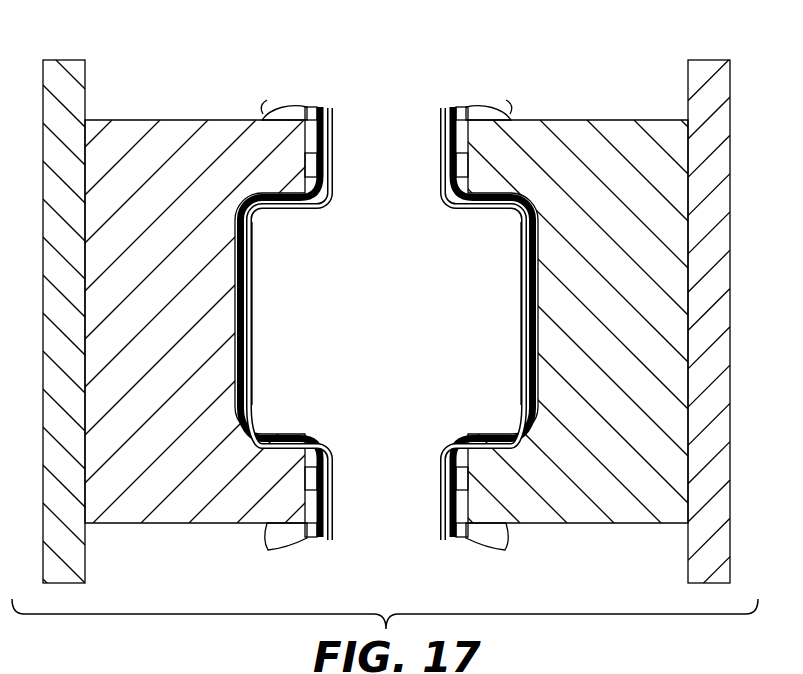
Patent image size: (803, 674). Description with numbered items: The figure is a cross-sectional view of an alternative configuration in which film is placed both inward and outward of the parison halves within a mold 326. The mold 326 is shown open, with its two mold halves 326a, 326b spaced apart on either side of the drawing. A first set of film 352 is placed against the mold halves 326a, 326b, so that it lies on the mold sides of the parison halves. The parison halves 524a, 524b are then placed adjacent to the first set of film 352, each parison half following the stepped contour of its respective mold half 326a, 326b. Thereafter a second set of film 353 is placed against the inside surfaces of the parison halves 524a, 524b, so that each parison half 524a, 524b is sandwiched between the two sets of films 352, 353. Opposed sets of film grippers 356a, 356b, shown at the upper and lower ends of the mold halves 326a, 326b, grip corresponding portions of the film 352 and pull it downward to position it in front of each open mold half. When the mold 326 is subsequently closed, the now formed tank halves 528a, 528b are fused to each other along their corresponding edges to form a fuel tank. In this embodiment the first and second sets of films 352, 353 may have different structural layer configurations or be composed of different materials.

The mold 326 is at (128, 48).
The first mold half 326a is at (132, 138).
The second mold half 326b is at (617, 135).
The film 352 is at (320, 540).
The film 353 is at (331, 541).
The film gripper 356a is at (275, 102).
The film gripper 356b is at (505, 99).
The first parison half 524a is at (243, 252).
The second parison half 524b is at (530, 252).
The first tank half 528a is at (274, 397).
The second tank half 528b is at (500, 377).